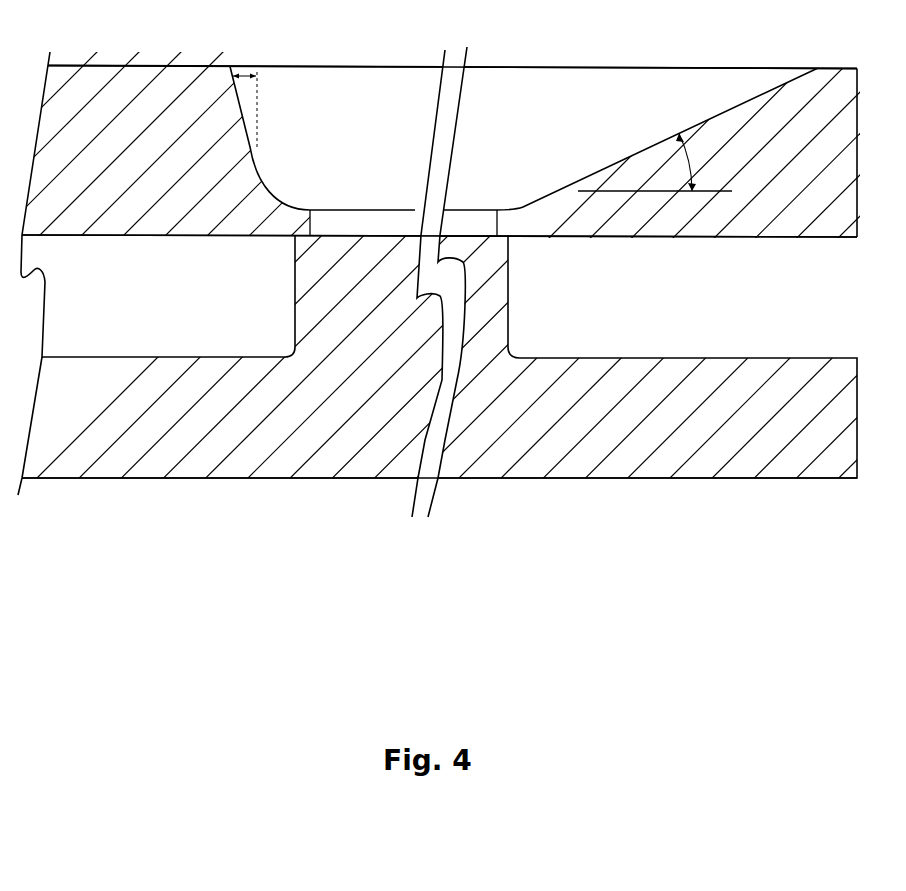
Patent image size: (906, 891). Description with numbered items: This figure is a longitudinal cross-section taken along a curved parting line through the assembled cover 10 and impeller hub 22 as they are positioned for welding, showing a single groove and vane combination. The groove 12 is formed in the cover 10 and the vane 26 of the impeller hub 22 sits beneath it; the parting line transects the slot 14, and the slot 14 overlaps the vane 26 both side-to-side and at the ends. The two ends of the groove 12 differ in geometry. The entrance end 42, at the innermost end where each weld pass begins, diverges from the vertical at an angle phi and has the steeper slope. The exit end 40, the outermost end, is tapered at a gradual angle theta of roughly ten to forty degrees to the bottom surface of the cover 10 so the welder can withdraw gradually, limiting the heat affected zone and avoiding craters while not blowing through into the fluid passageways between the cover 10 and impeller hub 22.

The cover 10 is at (115, 57).
The groove 12 is at (325, 53).
The slot 14 is at (327, 190).
The impeller hub 22 is at (212, 493).
The vane 26 is at (295, 298).
The exit end 40 is at (602, 107).
The entrance end 42 is at (192, 57).